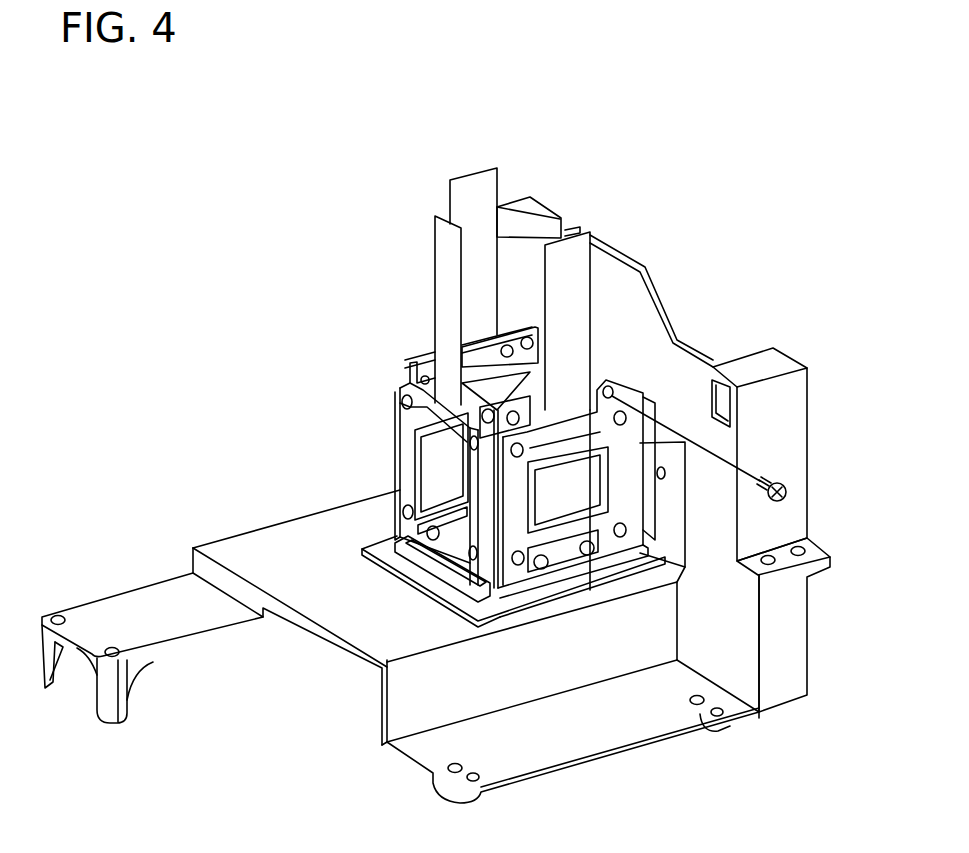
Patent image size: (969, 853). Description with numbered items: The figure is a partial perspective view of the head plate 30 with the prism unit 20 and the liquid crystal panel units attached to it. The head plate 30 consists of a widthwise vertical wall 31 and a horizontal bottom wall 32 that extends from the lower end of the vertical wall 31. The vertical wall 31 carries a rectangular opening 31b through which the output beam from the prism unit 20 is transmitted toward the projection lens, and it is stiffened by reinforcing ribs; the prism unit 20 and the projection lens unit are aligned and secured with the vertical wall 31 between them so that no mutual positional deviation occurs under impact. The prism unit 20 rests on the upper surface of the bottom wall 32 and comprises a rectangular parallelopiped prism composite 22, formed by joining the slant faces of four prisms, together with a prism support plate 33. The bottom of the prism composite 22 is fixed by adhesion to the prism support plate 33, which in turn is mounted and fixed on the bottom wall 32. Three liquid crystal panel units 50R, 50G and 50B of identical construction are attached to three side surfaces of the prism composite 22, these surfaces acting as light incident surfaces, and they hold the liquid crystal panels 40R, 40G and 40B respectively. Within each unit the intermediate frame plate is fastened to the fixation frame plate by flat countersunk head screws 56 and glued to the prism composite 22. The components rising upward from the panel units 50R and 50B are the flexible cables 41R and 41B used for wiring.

The prism unit 20 is at (412, 325).
The prism composite 22 is at (503, 370).
The head plate 30 is at (678, 260).
The vertical wall 31 is at (683, 368).
The rectangular opening 31b is at (632, 378).
The bottom wall 32 is at (373, 645).
The prism support plate 33 is at (445, 593).
The liquid crystal panel 40B is at (403, 360).
The liquid crystal panel 40G is at (443, 226).
The liquid crystal panel 40R is at (462, 494).
The flexible cable 41B is at (472, 187).
The flexible cable 41R is at (573, 278).
The liquid crystal panel unit 50B is at (382, 366).
The liquid crystal panel unit 50G is at (368, 460).
The liquid crystal panel unit 50R is at (522, 568).
The flat countersunk head screw 56 is at (768, 482).